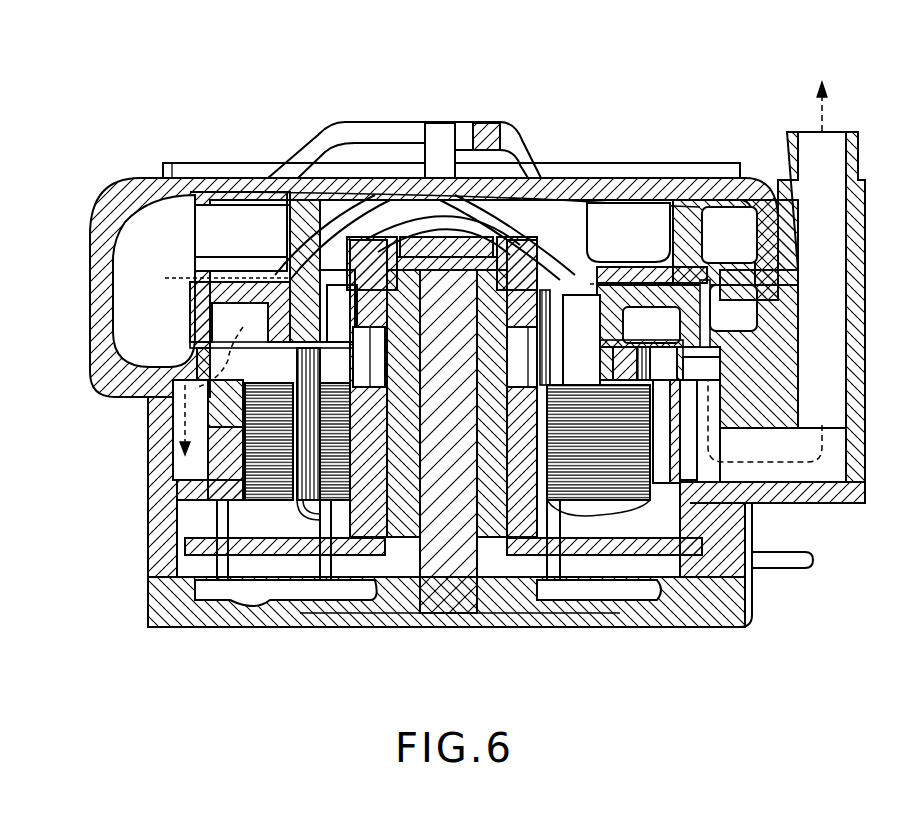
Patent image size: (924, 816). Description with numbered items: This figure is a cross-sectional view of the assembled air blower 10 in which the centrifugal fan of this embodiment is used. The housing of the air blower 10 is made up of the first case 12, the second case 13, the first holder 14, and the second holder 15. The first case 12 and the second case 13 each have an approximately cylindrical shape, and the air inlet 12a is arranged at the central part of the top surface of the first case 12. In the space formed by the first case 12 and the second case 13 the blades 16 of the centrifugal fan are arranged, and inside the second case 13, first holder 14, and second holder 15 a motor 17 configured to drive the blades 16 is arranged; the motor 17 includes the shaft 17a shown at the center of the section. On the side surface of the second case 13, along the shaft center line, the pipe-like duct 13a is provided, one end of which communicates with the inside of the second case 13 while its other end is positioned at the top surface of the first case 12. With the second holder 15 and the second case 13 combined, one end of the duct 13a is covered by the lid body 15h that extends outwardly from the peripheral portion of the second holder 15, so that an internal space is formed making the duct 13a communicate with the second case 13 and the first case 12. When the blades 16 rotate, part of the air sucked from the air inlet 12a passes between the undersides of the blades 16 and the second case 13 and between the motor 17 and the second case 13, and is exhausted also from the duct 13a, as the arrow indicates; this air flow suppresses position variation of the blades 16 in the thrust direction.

The air blower 10 is at (154, 99).
The first case 12 is at (577, 163).
The air inlet 12a is at (540, 163).
The second case 13 is at (862, 308).
The duct 13a is at (836, 140).
The first holder 14 is at (737, 603).
The second holder 15 is at (736, 556).
The lid body 15h is at (832, 504).
The blades 16 is at (673, 232).
The motor 17 is at (232, 482).
The shaft 17a is at (455, 612).